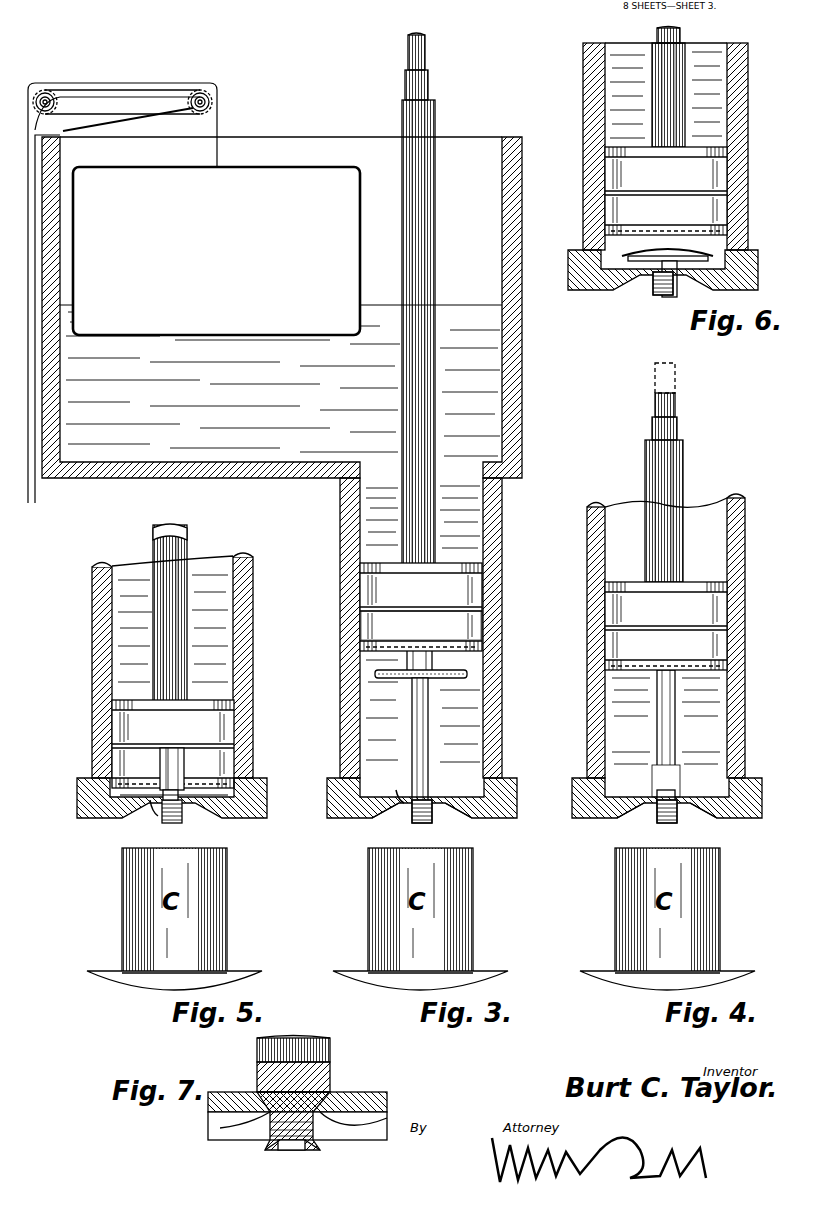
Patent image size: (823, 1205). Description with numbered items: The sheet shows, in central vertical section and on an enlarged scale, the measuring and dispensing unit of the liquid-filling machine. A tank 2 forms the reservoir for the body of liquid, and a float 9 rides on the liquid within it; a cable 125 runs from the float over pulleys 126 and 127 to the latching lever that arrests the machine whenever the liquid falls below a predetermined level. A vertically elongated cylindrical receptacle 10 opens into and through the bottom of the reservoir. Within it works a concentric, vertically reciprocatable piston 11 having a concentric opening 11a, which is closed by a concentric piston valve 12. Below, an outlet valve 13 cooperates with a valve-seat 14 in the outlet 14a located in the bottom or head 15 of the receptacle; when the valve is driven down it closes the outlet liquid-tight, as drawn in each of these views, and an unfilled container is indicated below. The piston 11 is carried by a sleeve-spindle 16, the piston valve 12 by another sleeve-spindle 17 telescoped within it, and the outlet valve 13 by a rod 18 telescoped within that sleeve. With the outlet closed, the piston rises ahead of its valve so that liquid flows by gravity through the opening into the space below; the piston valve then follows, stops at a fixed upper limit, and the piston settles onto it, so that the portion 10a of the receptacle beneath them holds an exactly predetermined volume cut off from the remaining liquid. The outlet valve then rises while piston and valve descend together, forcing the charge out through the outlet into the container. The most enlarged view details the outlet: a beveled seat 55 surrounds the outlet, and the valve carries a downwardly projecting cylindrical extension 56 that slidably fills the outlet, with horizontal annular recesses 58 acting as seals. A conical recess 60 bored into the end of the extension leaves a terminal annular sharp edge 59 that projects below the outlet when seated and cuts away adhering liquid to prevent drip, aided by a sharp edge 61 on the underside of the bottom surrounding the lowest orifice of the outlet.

In FIG. 3, the tank 2 is at (506, 360).
In FIG. 3, the float 9 is at (216, 251).
In FIG. 3, the cylindrical receptacle 10 is at (503, 578).
In FIG. 5, the cylindrical receptacle 10 is at (255, 720).
In FIG. 4, the cylindrical receptacle 10 is at (745, 572).
In FIG. 6, the cylindrical receptacle 10 is at (748, 76).
In FIG. 4, the measuring portion of receptacle interior 10a is at (666, 721).
In FIG. 3, the piston 11 is at (421, 607).
In FIG. 5, the piston 11 is at (173, 744).
In FIG. 4, the piston 11 is at (666, 626).
In FIG. 6, the piston 11 is at (666, 191).
In FIG. 3, the piston opening 11a is at (421, 625).
In FIG. 3, the piston valve 12 is at (448, 680).
In FIG. 5, the piston valve 12 is at (210, 800).
In FIG. 6, the piston valve 12 is at (705, 255).
In FIG. 3, the outlet valve 13 is at (428, 800).
In FIG. 5, the outlet valve 13 is at (185, 800).
In FIG. 4, the outlet valve 13 is at (675, 790).
In FIG. 6, the outlet valve 13 is at (662, 292).
In FIG. 7, the outlet valve 13 is at (325, 1082).
In FIG. 5, the valve-seat 14 is at (174, 769).
In FIG. 4, the valve-seat 14 is at (645, 790).
In FIG. 7, the valve-seat 14 is at (258, 1082).
In FIG. 3, the outlet 14a is at (398, 795).
In FIG. 5, the outlet 14a is at (160, 820).
In FIG. 7, the outlet 14a is at (225, 1128).
In FIG. 3, the bottom or head of receptacle 15 is at (492, 822).
In FIG. 5, the bottom or head of receptacle 15 is at (120, 822).
In FIG. 4, the bottom or head of receptacle 15 is at (735, 822).
In FIG. 6, the bottom or head of receptacle 15 is at (738, 290).
In FIG. 7, the bottom or head of receptacle 15 is at (382, 1094).
In FIG. 3, the sleeve-spindle 16 is at (420, 117).
In FIG. 5, the sleeve-spindle 16 is at (190, 558).
In FIG. 4, the sleeve-spindle 16 is at (672, 460).
In FIG. 6, the sleeve-spindle 16 is at (680, 92).
In FIG. 3, the sleeve-spindle 17 is at (418, 84).
In FIG. 5, the sleeve-spindle 17 is at (186, 526).
In FIG. 4, the sleeve-spindle 17 is at (668, 430).
In FIG. 6, the sleeve-spindle 17 is at (655, 36).
In FIG. 3, the rod 18 is at (425, 48).
In FIG. 5, the rod 18 is at (205, 778).
In FIG. 4, the rod 18 is at (668, 407).
In FIG. 6, the rod 18 is at (683, 34).
In FIG. 7, the rod 18 is at (298, 1048).
In FIG. 7, the beveled seat 55 is at (392, 1117).
In FIG. 3, the cylindrical extension 56 is at (417, 823).
In FIG. 4, the cylindrical extension 56 is at (665, 825).
In FIG. 6, the cylindrical extension 56 is at (662, 298).
In FIG. 7, the cylindrical extension 56 is at (318, 1140).
In FIG. 7, the annular circumferential recesses 58 is at (262, 1134).
In FIG. 7, the annular sharp edge 59 is at (280, 1150).
In FIG. 7, the conical recess 60 is at (298, 1152).
In FIG. 3, the sharp edge 61 is at (427, 821).
In FIG. 4, the sharp edge 61 is at (676, 822).
In FIG. 7, the sharp edge 61 is at (310, 1150).
In FIG. 3, the cable 125 is at (135, 86).
In FIG. 3, the pulley 126 is at (48, 88).
In FIG. 3, the pulley 127 is at (204, 90).